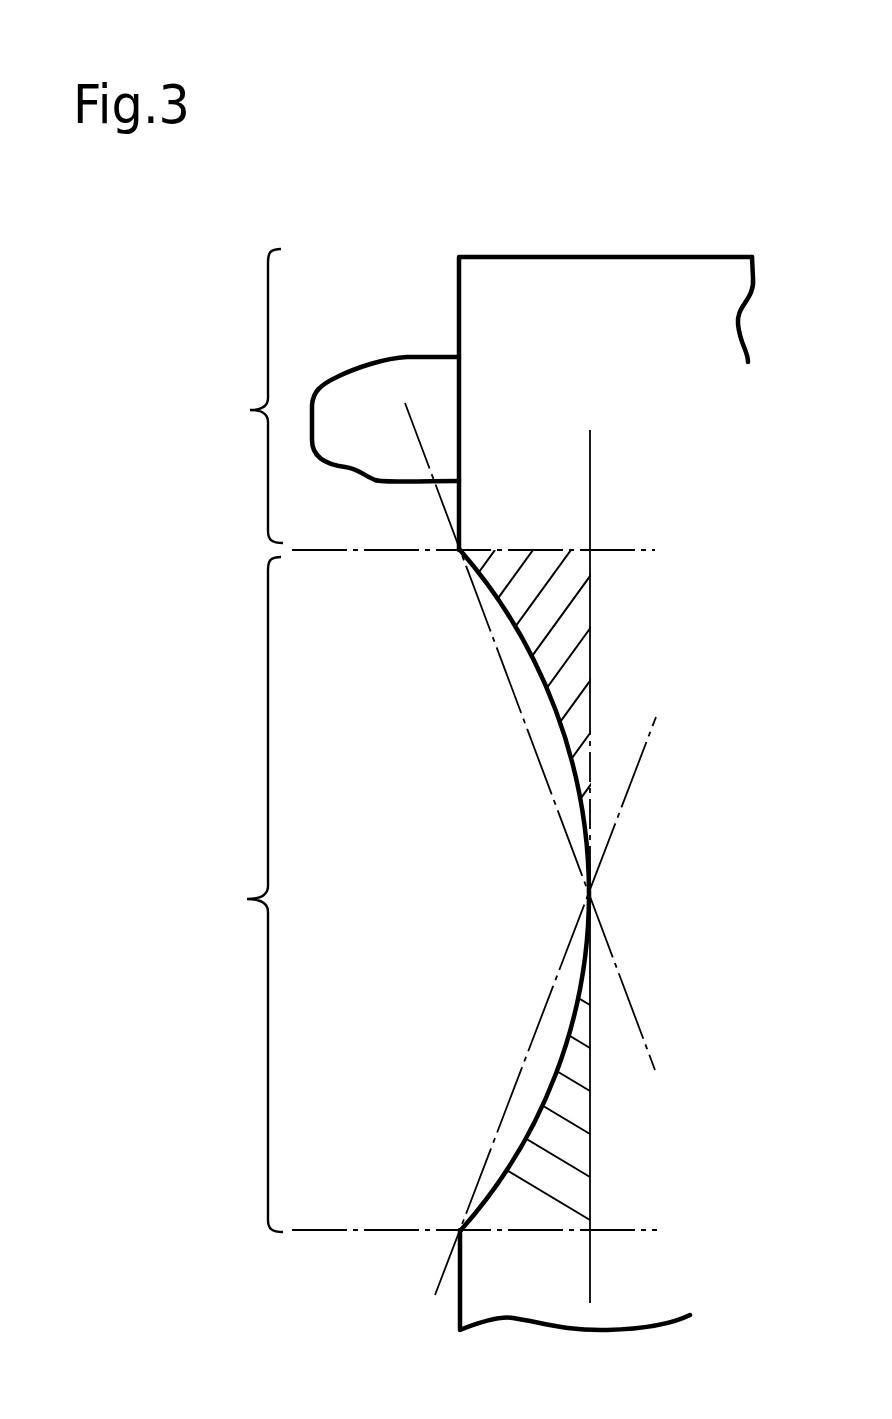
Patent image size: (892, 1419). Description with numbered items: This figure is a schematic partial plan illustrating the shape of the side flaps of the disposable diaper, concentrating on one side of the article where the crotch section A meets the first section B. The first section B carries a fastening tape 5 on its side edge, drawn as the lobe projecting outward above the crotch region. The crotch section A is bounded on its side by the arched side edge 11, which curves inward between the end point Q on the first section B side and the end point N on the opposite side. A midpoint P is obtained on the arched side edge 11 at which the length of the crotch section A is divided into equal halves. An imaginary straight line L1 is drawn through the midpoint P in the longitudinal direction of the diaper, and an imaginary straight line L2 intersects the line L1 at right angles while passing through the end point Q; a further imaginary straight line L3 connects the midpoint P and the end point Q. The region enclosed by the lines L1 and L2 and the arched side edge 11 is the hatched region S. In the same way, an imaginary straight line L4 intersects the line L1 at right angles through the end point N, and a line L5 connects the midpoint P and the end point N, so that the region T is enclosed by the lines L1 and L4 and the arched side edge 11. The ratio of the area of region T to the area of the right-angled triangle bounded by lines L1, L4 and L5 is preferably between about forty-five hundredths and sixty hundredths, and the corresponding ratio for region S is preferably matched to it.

The fastening tape 5 is at (363, 473).
The arched side edge 11 is at (524, 647).
The imaginary straight line L1 is at (593, 654).
The imaginary straight line L2 is at (530, 551).
The imaginary straight line L3 is at (524, 730).
The imaginary straight line L4 is at (521, 1235).
The line L5 is at (533, 1040).
The midpoint P is at (589, 891).
The end point Q is at (460, 553).
The end point N is at (461, 1228).
The region S is at (562, 612).
The region T is at (578, 1181).
The crotch section A is at (241, 894).
The first section B is at (244, 396).